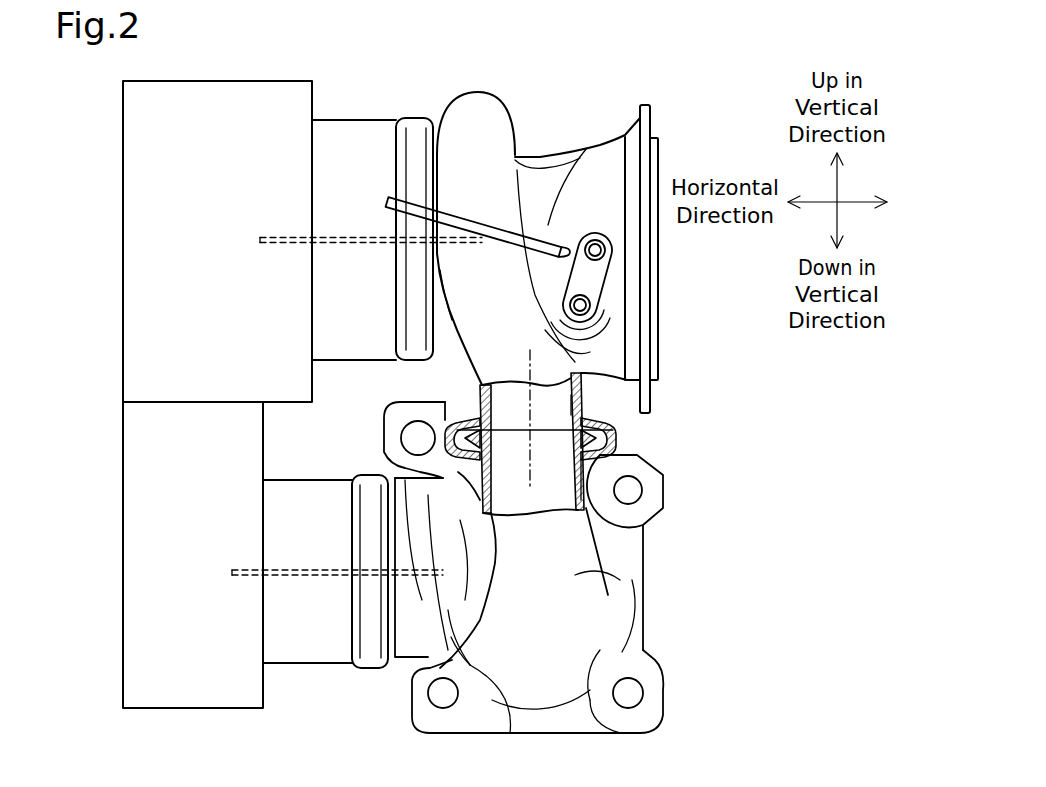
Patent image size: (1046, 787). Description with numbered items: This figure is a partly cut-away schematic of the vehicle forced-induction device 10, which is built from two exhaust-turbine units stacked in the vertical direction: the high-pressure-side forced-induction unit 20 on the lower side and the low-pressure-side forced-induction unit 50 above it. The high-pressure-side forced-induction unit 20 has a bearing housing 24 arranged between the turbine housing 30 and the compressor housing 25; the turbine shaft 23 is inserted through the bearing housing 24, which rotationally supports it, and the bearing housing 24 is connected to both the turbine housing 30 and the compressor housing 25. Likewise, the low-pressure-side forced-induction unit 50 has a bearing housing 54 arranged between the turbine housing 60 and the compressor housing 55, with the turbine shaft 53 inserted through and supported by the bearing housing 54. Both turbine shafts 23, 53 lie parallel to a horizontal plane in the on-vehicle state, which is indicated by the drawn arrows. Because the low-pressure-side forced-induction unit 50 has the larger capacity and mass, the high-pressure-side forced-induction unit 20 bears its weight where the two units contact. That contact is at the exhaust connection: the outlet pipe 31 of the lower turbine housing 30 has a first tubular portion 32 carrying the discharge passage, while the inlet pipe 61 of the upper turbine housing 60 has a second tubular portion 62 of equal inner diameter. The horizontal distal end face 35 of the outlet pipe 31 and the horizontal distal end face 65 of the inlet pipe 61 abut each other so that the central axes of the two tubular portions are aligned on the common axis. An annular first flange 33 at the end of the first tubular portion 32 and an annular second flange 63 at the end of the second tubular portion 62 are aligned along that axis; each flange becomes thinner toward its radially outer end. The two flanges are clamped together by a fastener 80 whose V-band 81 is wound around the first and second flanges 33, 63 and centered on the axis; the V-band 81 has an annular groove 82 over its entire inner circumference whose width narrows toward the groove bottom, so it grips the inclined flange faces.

The vehicle forced-induction device 10 is at (530, 97).
The high-pressure-side forced-induction unit 20 is at (115, 577).
The turbine shaft 23 is at (243, 568).
The bearing housing 24 is at (302, 665).
The compressor housing 25 is at (192, 708).
The turbine housing 30 is at (508, 733).
The outlet pipe 31 is at (640, 582).
The first tubular portion 32 is at (490, 495).
The first flange 33 is at (400, 462).
The distal end face 35 is at (562, 428).
The low-pressure-side forced-induction unit 50 is at (115, 272).
The turbine shaft 53 is at (275, 235).
The bearing housing 54 is at (355, 120).
The compressor housing 55 is at (123, 82).
The turbine housing 60 is at (548, 150).
The inlet pipe 61 is at (455, 320).
The second tubular portion 62 is at (492, 382).
The second flange 63 is at (488, 428).
The distal end face 65 is at (576, 455).
The fastener 80 is at (472, 408).
The V-band 81 is at (617, 424).
The annular groove 82 is at (617, 454).